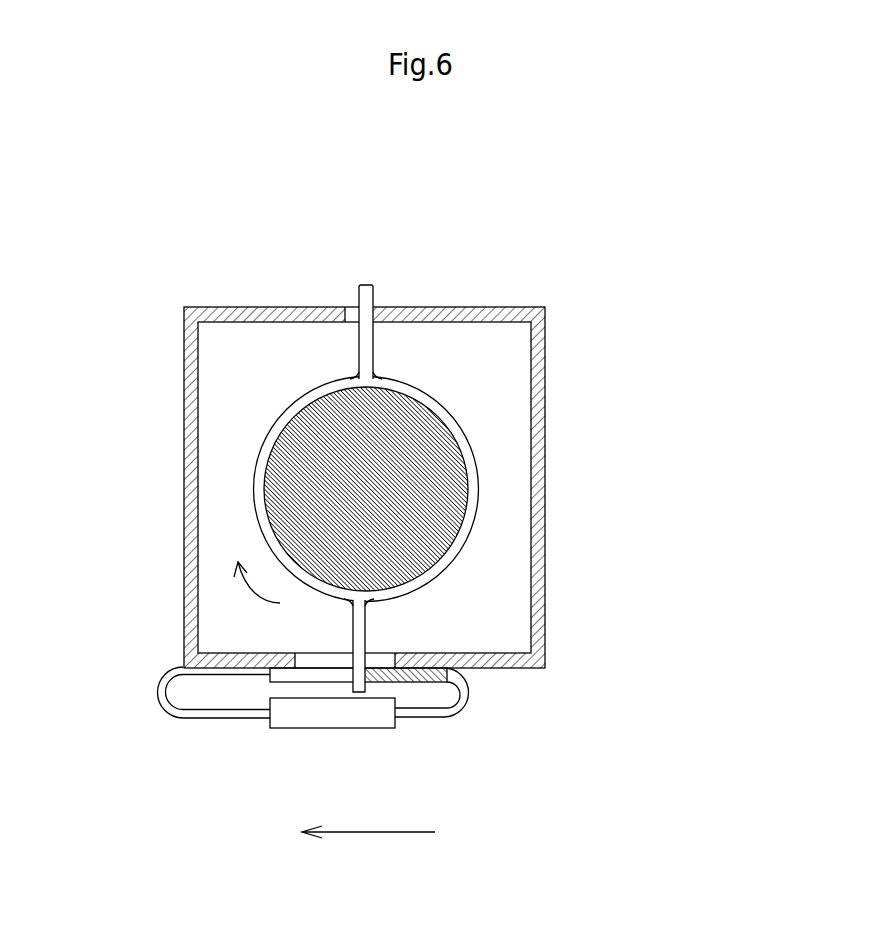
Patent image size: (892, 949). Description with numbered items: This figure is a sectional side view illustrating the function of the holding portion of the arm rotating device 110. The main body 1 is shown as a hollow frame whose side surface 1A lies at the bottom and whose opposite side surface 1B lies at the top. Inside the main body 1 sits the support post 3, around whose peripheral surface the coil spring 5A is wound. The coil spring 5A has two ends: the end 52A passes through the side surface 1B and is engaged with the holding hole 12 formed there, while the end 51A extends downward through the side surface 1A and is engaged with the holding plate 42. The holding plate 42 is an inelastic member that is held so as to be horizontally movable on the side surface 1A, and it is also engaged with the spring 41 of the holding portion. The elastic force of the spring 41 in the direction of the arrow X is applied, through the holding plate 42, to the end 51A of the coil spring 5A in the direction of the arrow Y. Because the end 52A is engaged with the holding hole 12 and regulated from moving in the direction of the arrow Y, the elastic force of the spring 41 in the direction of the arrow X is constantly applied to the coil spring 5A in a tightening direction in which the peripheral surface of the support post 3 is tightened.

The apparatus 110 is at (205, 233).
The main body 1 is at (545, 307).
The side surface 1A is at (545, 668).
The side surface 1B is at (497, 307).
The holding hole 12 is at (352, 307).
The support post 3 is at (375, 518).
The coil spring 5A is at (480, 465).
The end of coil spring 51A is at (365, 640).
The end of coil spring 52A is at (373, 298).
The spring 41 is at (295, 728).
The holding plate 42 is at (418, 683).